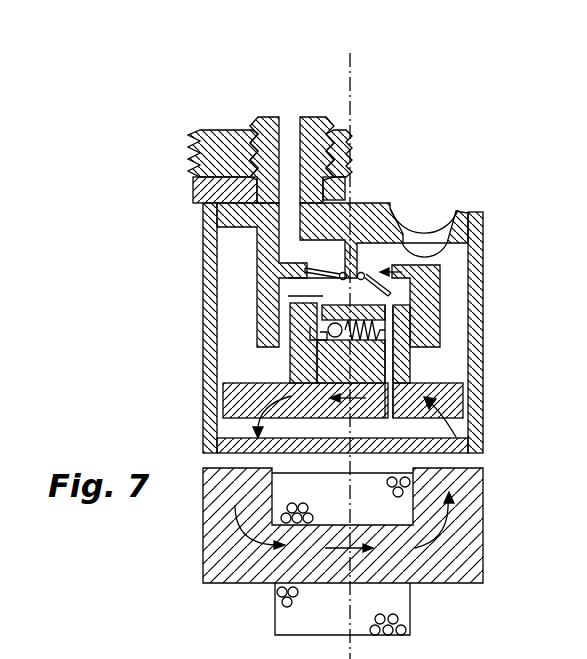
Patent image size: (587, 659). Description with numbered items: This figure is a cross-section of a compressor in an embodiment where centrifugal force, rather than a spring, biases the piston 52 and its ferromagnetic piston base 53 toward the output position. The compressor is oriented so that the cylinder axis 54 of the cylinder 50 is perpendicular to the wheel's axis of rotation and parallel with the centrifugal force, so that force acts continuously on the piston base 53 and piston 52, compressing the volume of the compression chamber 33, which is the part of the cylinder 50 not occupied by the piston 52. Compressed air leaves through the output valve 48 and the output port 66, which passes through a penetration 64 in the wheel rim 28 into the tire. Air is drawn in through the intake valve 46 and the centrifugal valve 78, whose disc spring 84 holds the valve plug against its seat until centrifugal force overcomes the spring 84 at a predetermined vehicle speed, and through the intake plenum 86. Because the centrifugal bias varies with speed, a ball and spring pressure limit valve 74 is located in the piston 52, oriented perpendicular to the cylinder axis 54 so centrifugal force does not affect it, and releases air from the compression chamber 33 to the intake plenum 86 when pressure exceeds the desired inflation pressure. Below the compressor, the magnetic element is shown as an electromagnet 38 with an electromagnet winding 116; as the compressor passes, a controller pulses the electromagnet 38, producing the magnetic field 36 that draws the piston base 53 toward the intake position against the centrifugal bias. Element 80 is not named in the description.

The rim 28 is at (347, 183).
The compression chamber 33 is at (322, 297).
The magnetic field 36 is at (230, 528).
The electromagnet 38 is at (483, 502).
The intake valve 46 is at (425, 318).
The output valve 48 is at (318, 278).
The cylinder 50 is at (430, 300).
The piston 52 is at (284, 362).
The piston base 53 is at (365, 440).
The cylinder axis 54 is at (350, 78).
The penetration 64 is at (256, 183).
The output port 66 is at (290, 127).
The pressure limit valve 74 is at (335, 340).
The centrifugal valve 78 is at (463, 208).
The ball 80 is at (427, 250).
The disc spring 84 is at (453, 222).
The intake plenum 86 is at (453, 358).
The electromagnet winding 116 is at (402, 621).